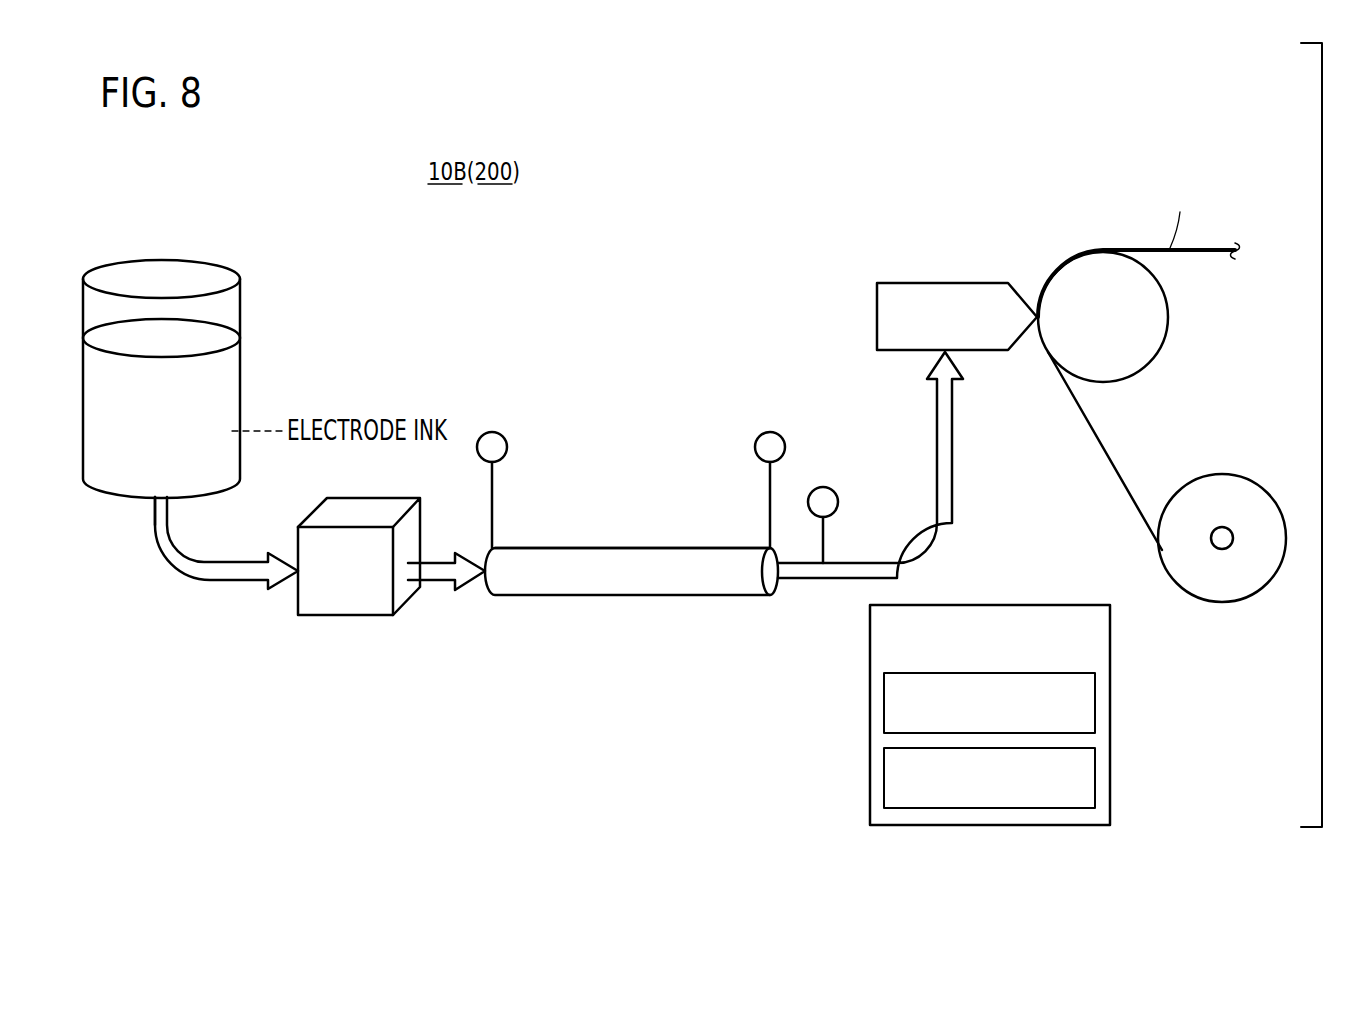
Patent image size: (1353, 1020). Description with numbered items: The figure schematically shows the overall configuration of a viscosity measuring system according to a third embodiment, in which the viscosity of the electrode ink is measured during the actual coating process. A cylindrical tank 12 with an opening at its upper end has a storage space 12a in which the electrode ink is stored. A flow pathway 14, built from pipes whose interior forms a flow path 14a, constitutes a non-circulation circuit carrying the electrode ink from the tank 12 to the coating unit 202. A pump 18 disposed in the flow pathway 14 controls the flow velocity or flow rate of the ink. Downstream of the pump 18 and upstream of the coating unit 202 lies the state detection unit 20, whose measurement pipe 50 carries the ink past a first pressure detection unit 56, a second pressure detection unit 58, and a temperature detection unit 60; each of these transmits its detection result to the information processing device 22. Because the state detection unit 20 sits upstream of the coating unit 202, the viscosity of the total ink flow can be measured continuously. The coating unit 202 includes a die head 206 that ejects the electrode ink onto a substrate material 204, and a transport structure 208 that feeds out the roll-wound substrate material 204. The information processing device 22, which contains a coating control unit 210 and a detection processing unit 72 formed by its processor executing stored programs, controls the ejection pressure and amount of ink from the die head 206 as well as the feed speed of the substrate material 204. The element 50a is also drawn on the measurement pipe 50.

The tank 12 is at (286, 276).
The storage space 12a is at (232, 311).
The flow pathway 14 is at (155, 568).
The flow path 14a is at (162, 520).
The pump 18 is at (333, 621).
The state detection unit 20 is at (631, 512).
The measurement pipe 50 is at (637, 548).
The filter element 50a is at (583, 568).
The first pressure detection unit 56 is at (490, 431).
The second pressure detection unit 58 is at (769, 431).
The temperature detection unit 60 is at (822, 486).
The coating unit 202 is at (1081, 382).
The substrate material 204 is at (1100, 452).
The die head 206 is at (938, 283).
The transport structure 208 is at (1178, 343).
The information processing device 22 is at (1022, 715).
The coating control unit 210 is at (1096, 705).
The detection processing unit 72 is at (1096, 780).